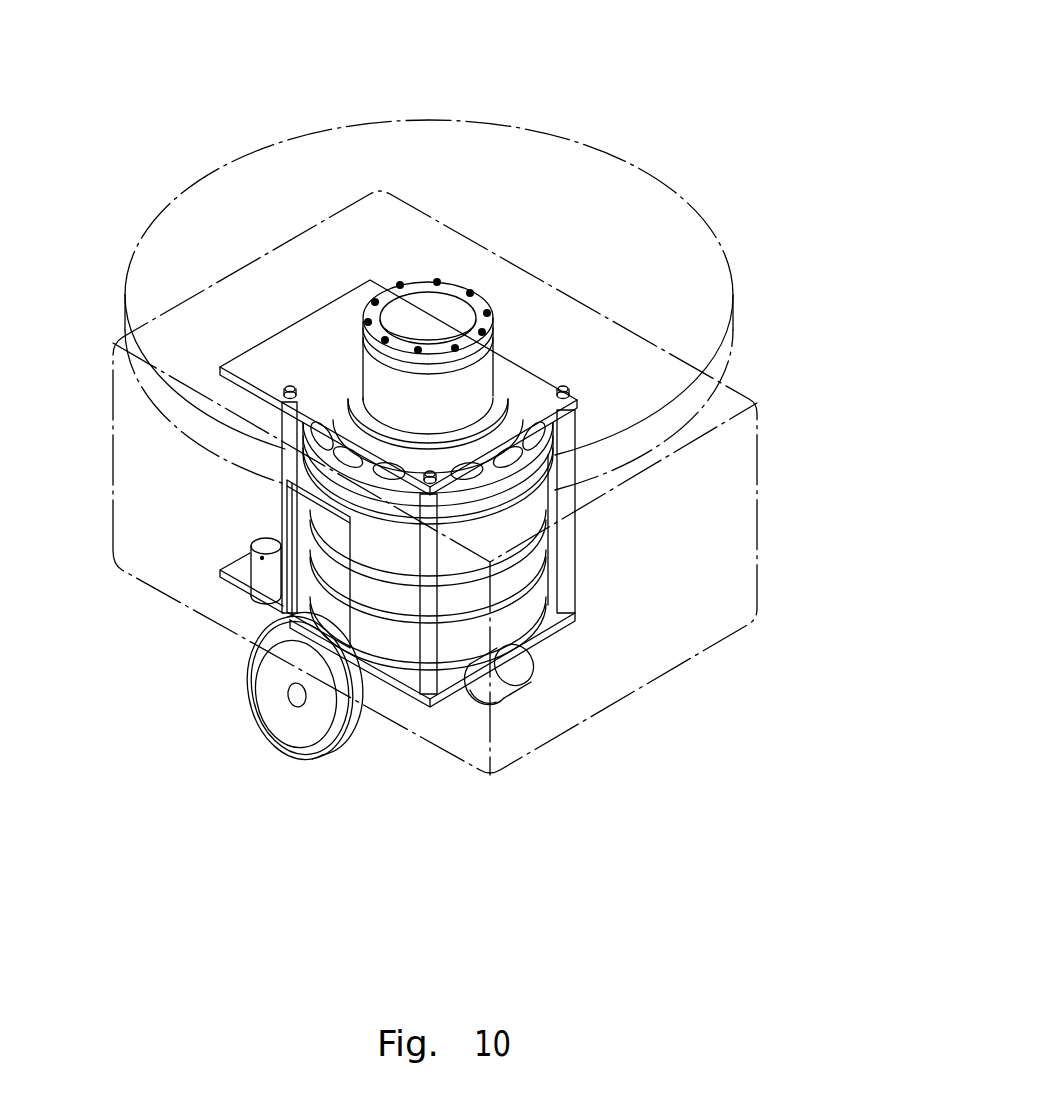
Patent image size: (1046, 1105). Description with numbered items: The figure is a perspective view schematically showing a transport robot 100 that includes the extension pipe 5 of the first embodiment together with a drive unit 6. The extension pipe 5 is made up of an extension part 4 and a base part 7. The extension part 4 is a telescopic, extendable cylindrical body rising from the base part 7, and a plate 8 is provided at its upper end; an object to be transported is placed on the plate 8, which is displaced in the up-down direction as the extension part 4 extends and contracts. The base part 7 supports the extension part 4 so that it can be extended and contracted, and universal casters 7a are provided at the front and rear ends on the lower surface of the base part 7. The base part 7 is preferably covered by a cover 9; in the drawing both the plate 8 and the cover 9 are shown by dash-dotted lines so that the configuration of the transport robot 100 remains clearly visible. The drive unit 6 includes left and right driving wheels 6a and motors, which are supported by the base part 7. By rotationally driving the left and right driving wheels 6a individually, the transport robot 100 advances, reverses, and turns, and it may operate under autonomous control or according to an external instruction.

The transport robot 100 is at (815, 38).
The extension part 4 is at (455, 287).
The extension pipe 5 is at (540, 800).
The drive unit 6 is at (268, 715).
The driving wheels 6a is at (317, 752).
The base part 7 is at (573, 640).
The universal casters 7a is at (517, 677).
The plate 8 is at (658, 215).
The cover 9 is at (723, 493).